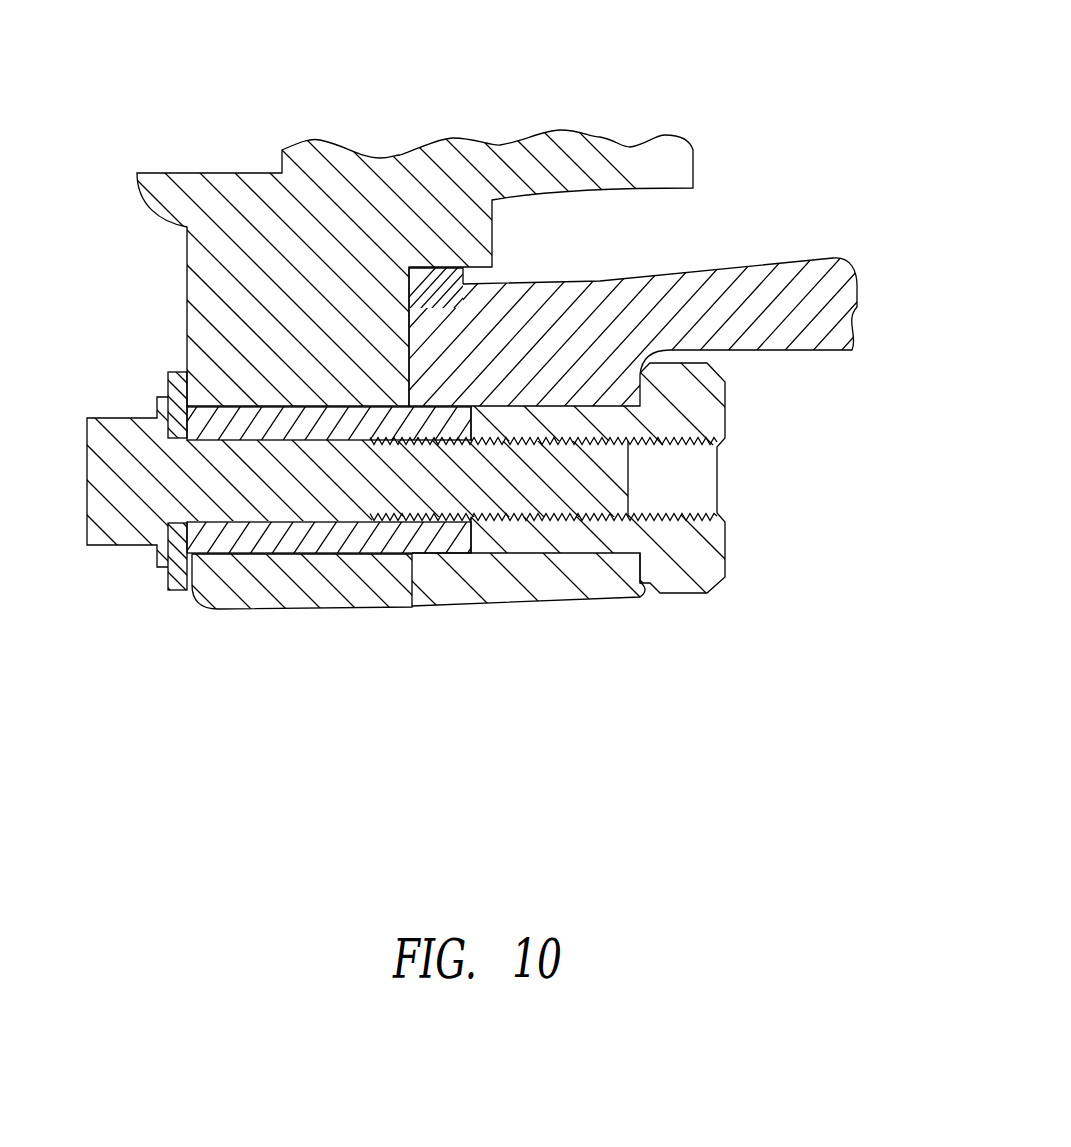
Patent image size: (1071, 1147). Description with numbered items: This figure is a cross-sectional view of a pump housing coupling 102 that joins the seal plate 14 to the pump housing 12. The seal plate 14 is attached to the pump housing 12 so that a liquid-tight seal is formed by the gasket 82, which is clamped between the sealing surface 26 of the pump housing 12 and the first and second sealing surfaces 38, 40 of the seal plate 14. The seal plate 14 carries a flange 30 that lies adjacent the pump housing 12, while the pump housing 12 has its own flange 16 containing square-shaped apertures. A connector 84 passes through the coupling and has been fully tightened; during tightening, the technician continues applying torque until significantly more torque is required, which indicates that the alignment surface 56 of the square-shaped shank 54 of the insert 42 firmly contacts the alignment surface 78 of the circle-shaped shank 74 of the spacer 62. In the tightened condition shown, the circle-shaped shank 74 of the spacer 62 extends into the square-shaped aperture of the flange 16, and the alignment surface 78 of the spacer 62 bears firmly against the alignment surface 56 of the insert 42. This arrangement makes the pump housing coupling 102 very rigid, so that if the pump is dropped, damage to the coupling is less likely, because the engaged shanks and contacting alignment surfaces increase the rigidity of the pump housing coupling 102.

The pump housing coupling 102 is at (737, 60).
The seal plate 14 is at (658, 158).
The pump housing 12 is at (830, 291).
The second sealing surface 40 is at (440, 280).
The first sealing surface 38 is at (502, 288).
The gasket 82 is at (465, 277).
The sealing surface 26 is at (465, 308).
The insert 42 is at (696, 393).
The connector 84 is at (100, 477).
The spacer 62 is at (170, 579).
The alignment surface 78 is at (468, 532).
The circle-shaped shank 74 is at (228, 542).
The flange 30 is at (267, 593).
The flange 16 is at (457, 590).
The alignment surface 56 is at (478, 544).
The square-shaped shank 54 is at (572, 540).